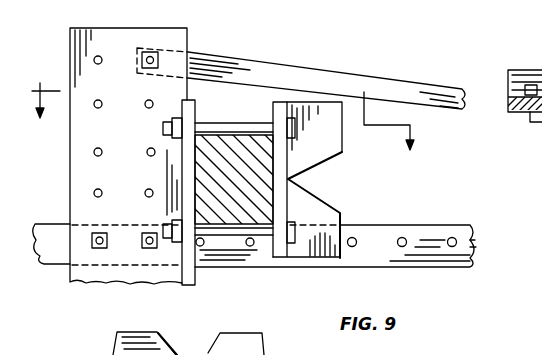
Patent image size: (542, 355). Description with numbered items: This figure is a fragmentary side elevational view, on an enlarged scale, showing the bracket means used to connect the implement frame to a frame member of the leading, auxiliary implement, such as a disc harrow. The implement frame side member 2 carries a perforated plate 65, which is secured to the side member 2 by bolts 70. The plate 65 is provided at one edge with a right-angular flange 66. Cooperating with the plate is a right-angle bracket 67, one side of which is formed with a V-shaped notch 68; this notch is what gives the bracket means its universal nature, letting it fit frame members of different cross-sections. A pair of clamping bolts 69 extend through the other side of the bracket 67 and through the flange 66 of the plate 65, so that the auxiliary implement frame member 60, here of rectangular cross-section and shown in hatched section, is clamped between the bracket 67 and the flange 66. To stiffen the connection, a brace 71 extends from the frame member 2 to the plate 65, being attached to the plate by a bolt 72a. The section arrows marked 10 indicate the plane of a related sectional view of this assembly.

The implement frame side member 2 is at (440, 225).
The section line 10 is at (230, 121).
The auxiliary implement frame member 60 is at (233, 210).
The perforated plate 65 is at (115, 40).
The right-angular flange 66 is at (197, 115).
The right-angle bracket 67 is at (320, 110).
The V-shaped notch 68 is at (320, 160).
The clamping bolts 69 is at (247, 127).
The bolts 70 is at (98, 250).
The brace 71 is at (233, 68).
The bolt 72a is at (153, 54).